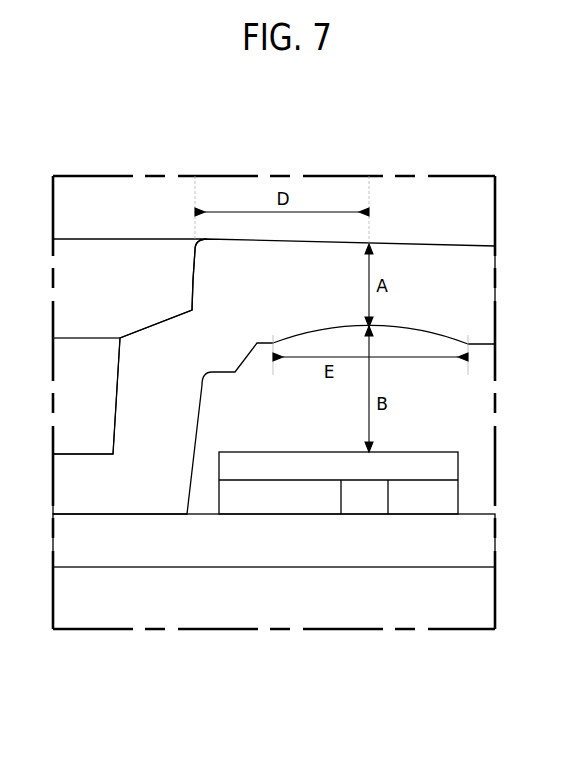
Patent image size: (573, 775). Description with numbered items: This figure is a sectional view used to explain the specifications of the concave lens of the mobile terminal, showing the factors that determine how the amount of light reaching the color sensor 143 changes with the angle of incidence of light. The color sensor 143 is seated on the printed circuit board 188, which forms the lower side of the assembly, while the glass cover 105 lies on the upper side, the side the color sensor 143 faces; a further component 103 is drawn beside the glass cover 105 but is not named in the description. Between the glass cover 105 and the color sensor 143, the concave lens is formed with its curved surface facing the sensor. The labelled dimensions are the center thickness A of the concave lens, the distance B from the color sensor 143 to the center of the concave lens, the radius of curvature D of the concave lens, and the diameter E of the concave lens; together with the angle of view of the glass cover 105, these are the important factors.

The first mold 103 is at (81, 258).
The glass cover 105 is at (465, 260).
The color sensor 143 is at (337, 480).
The printed circuit board 188 is at (173, 537).